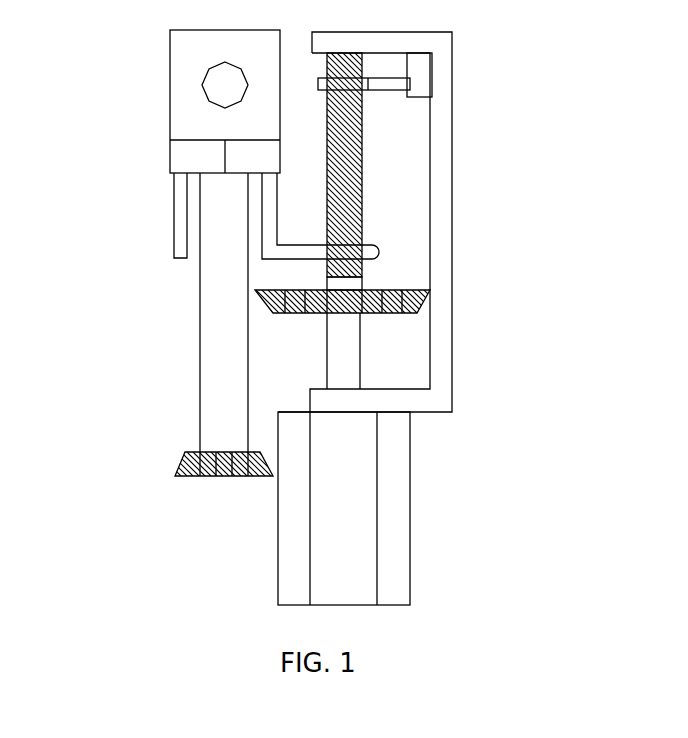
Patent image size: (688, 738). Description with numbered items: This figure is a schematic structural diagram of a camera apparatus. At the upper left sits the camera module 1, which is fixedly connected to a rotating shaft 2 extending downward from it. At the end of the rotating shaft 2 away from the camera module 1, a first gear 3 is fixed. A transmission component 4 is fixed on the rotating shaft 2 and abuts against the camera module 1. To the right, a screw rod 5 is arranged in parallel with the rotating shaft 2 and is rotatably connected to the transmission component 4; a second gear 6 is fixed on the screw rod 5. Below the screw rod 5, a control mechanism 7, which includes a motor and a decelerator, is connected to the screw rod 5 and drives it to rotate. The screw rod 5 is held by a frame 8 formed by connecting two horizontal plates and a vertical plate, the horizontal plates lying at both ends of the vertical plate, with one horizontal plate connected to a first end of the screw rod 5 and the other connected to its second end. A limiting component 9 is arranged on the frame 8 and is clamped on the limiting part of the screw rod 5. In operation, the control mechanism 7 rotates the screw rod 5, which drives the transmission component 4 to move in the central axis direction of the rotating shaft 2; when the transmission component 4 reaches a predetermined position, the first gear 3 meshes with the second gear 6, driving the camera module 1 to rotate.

The camera module 1 is at (212, 50).
The rotating shaft 2 is at (227, 338).
The first gear 3 is at (197, 466).
The transmission component 4 is at (238, 165).
The screw rod 5 is at (360, 167).
The second gear 6 is at (350, 303).
The control mechanism 7 is at (335, 568).
The frame 8 is at (433, 377).
The limiting component 9 is at (412, 82).